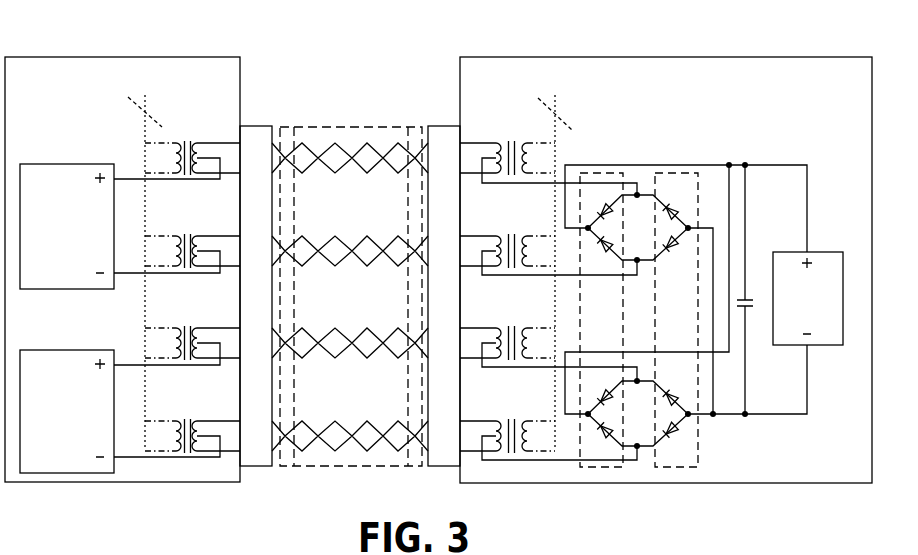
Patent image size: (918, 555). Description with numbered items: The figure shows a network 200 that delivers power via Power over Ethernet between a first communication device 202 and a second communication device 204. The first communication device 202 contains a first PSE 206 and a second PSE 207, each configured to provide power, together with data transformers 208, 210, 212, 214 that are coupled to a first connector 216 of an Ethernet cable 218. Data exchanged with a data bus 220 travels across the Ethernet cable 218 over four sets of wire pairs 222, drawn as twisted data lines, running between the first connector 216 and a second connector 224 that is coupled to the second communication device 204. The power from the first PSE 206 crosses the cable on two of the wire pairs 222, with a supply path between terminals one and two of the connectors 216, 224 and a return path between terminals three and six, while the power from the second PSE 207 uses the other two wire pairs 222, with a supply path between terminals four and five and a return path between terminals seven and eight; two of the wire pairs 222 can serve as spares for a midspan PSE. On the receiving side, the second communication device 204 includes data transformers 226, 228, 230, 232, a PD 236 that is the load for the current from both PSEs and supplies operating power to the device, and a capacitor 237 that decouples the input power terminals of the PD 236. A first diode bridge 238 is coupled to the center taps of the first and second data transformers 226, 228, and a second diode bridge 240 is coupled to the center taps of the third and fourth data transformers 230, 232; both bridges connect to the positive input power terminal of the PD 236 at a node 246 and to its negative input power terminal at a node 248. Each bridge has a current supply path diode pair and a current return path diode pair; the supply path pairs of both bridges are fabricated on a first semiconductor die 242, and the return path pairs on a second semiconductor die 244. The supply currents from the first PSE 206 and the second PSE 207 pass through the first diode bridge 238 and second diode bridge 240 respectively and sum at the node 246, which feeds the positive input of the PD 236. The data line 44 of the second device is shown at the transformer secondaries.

The network 200 is at (438, 261).
The first communication device 202 is at (48, 88).
The second communication device 204 is at (861, 89).
The first PSE 206 is at (60, 164).
The second PSE 207 is at (60, 350).
The data transformer 208 is at (232, 143).
The data transformer 210 is at (235, 236).
The data transformer 212 is at (236, 328).
The data transformer 214 is at (236, 421).
The first connector 216 is at (258, 126).
The Ethernet cable 218 is at (352, 265).
The data bus 220 is at (143, 128).
The wire pairs 222 is at (387, 173).
The second connector 224 is at (452, 127).
The first data transformer 226 is at (473, 143).
The second data transformer 228 is at (473, 236).
The third data transformer 230 is at (473, 328).
The fourth data transformer 232 is at (473, 421).
The PD data interface line 44 is at (562, 122).
The PD 236 is at (812, 252).
The capacitor 237 is at (755, 272).
The first diode bridge 238 is at (669, 190).
The second diode bridge 240 is at (684, 452).
The first semiconductor die 242 is at (600, 173).
The second semiconductor die 244 is at (700, 448).
The node 246 is at (758, 145).
The node 248 is at (762, 436).